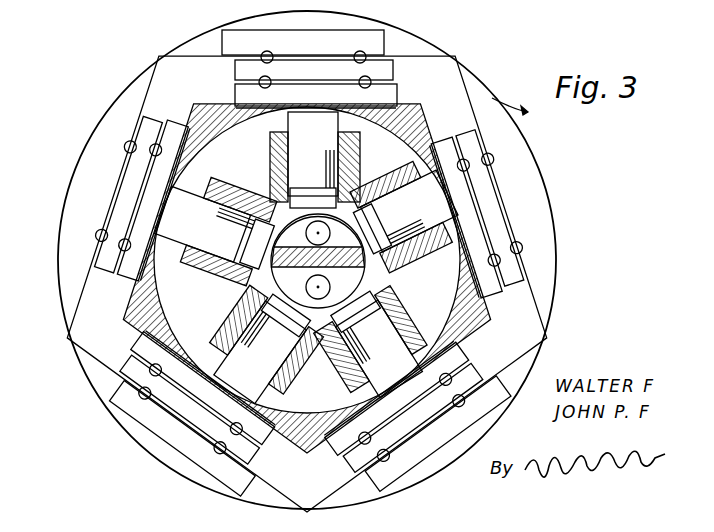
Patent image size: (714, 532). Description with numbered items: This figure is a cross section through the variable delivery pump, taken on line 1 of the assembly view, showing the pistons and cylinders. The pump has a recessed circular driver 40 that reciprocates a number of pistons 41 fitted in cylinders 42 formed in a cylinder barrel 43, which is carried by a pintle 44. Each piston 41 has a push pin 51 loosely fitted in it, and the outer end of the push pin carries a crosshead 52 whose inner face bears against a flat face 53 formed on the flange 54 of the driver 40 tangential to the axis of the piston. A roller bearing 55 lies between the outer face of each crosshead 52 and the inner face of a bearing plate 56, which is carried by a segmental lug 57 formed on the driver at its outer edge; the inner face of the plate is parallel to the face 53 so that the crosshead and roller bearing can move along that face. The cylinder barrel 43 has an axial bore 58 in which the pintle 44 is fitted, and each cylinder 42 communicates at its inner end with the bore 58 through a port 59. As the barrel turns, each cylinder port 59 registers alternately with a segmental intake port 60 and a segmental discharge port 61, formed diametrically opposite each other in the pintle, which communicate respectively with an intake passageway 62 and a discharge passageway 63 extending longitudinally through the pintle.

The pump assembly 1 is at (455, 16).
The recessed circular driver 40 is at (549, 292).
The piston 41 is at (300, 398).
The cylinder 42 is at (306, 196).
The cylinder barrel 43 is at (246, 290).
The pintle 44 is at (341, 231).
The push pin 51 is at (326, 102).
The crosshead 52 is at (300, 460).
The flat face 53 is at (488, 316).
The flange 54 is at (136, 311).
The roller bearing 55 is at (312, 480).
The bearing plate 56 is at (170, 485).
The segmental lug 57 is at (438, 474).
The axial bore 58 is at (400, 284).
The port 59 is at (280, 315).
The segmental intake port 60 is at (318, 271).
The segmental discharge port 61 is at (318, 232).
The intake passageway 62 is at (331, 288).
The discharge passageway 63 is at (331, 237).